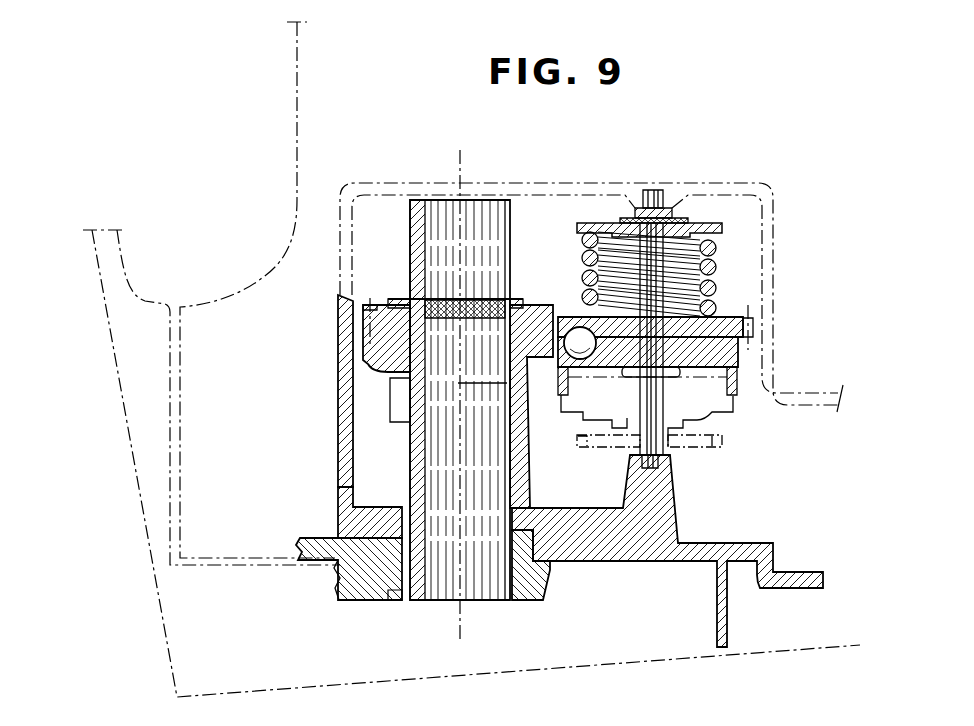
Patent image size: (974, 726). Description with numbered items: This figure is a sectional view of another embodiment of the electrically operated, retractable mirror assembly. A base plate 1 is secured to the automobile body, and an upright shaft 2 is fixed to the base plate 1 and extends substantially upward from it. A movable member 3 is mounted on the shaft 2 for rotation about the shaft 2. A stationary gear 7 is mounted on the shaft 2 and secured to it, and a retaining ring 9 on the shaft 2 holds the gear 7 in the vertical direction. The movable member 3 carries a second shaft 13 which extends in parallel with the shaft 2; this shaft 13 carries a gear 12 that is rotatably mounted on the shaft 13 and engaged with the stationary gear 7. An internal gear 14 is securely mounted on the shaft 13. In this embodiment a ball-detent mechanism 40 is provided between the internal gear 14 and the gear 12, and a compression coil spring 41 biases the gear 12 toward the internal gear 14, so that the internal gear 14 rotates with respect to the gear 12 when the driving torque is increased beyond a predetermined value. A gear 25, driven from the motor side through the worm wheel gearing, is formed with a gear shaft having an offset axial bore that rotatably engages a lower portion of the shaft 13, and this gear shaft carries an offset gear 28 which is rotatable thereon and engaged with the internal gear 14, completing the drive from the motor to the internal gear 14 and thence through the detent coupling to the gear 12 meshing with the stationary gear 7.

The base plate 1 is at (545, 600).
The shaft 2 is at (441, 205).
The movable member 3 is at (632, 555).
The stationary gear 7 is at (536, 312).
The retaining ring 9 is at (517, 298).
The gear 12 is at (754, 327).
The shaft 13 is at (640, 435).
The internal gear 14 is at (737, 352).
The gear 25 is at (722, 446).
The offset gear 28 is at (740, 398).
The ball-detent mechanism 40 is at (583, 358).
The compression coil spring 41 is at (715, 290).